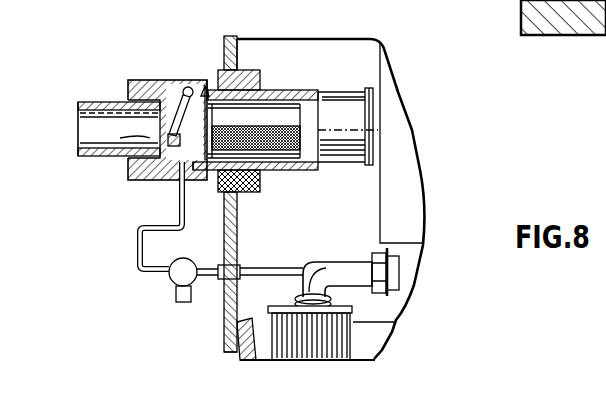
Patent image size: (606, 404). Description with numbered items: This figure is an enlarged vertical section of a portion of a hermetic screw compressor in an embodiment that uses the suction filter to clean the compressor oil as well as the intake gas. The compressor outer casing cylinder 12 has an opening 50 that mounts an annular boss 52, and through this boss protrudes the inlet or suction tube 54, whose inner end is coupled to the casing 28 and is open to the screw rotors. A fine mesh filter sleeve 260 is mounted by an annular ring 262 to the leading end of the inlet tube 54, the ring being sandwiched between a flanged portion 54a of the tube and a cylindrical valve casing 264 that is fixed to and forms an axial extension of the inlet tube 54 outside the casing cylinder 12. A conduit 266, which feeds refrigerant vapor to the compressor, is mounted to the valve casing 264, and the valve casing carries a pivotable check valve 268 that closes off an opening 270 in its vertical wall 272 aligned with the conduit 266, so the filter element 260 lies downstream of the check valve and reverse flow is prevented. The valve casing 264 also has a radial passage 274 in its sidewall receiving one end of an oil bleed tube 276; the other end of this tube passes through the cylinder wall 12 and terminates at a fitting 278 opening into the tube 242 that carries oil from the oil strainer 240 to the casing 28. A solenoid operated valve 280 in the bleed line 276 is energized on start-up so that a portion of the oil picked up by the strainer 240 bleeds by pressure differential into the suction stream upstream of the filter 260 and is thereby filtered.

The compressor outer casing cylinder 12 is at (223, 43).
The casing 28 is at (392, 108).
The opening 50 is at (243, 70).
The annular boss 52 is at (262, 77).
The inlet or suction tube 54 is at (295, 92).
The flanged portion 54a is at (207, 80).
The oil strainer 240 is at (352, 322).
The pipe or tube 242 is at (333, 261).
The fine mesh filter sleeve 260 is at (292, 172).
The annular ring 262 is at (247, 191).
The cylindrical valve casing 264 is at (160, 181).
The conduit 266 is at (91, 102).
The pivotable check valve 268 is at (170, 138).
The opening 270 is at (120, 138).
The vertical wall 272 is at (128, 159).
The radial passage 274 is at (190, 185).
The oil bleed tube 276 is at (139, 247).
The fitting 278 is at (304, 261).
The solenoid operated valve 280 is at (175, 295).